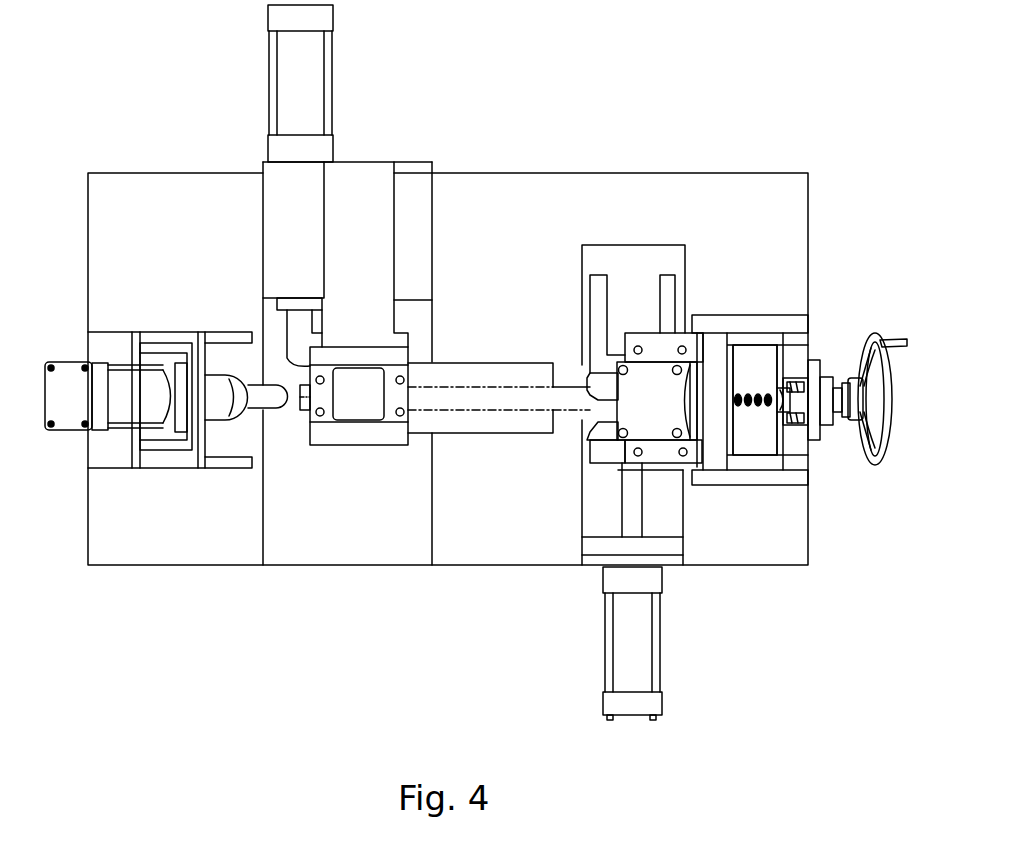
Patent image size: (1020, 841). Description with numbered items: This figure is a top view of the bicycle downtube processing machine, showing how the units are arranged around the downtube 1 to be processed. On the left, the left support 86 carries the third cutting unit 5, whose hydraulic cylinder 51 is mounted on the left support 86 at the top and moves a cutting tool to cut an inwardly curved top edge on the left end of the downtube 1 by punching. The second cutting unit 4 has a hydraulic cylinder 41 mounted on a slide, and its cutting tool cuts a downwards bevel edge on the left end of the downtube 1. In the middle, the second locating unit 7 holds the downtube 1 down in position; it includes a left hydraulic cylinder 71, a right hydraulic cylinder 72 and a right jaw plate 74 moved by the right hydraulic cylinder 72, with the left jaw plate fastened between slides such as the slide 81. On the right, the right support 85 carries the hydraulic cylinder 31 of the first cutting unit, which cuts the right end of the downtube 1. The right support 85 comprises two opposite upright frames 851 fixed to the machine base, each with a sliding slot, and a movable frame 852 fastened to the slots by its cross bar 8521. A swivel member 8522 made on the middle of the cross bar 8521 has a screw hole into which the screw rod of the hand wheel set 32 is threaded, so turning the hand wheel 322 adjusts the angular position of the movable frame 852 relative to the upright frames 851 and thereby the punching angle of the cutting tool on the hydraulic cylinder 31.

The downtube 1 is at (508, 393).
The second cutting unit 4 is at (264, 105).
The hydraulic cylinder 41 is at (315, 90).
The third cutting unit 5 is at (81, 357).
The hydraulic cylinder 51 is at (148, 417).
The second locating unit 7 is at (575, 528).
The left hydraulic cylinder 71 is at (370, 427).
The right hydraulic cylinder 72 is at (645, 647).
The right jaw plate 74 is at (595, 437).
The hydraulic cylinder 31 is at (652, 373).
The hand wheel set 32 is at (891, 420).
The hand wheel 322 is at (874, 468).
The slide 81 is at (298, 553).
The right support 85 is at (727, 308).
The upright frames 851 is at (771, 486).
The movable frame 852 is at (768, 338).
The cross bar 8521 is at (803, 444).
The swivel member 8522 is at (802, 396).
The left support 86 is at (100, 453).